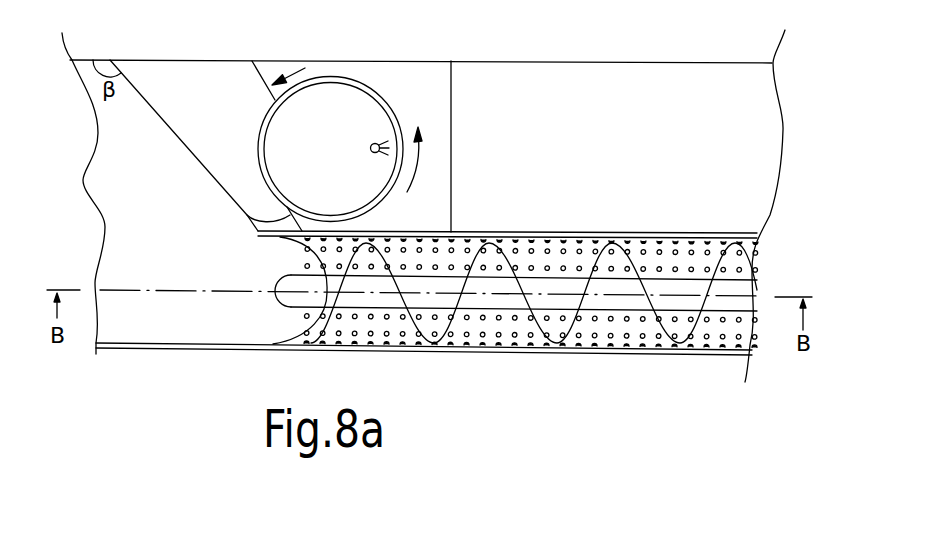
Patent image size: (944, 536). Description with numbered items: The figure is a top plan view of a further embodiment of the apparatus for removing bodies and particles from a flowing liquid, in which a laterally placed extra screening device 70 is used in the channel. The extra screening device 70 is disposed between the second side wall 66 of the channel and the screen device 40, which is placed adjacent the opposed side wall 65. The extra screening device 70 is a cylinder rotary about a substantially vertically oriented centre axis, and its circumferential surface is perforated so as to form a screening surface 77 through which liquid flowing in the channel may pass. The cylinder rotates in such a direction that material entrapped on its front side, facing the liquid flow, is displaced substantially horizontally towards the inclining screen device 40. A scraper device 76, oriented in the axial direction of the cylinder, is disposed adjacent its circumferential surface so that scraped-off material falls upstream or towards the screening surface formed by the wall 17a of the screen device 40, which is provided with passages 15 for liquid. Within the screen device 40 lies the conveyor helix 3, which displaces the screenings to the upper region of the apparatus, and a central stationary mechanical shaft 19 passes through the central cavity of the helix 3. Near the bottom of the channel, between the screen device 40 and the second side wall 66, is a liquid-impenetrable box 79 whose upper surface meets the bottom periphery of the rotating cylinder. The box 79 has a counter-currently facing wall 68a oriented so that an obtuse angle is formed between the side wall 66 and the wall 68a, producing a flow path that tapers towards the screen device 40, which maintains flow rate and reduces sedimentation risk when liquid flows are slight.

The second side wall of the channel 66 is at (128, 60).
The wall of the box 68a is at (165, 123).
The extra screening device 70 is at (365, 84).
The screening surface 77 is at (259, 160).
The box 79 is at (248, 182).
The scraper device 76 is at (247, 215).
The wall of the screen device 17a is at (683, 250).
The side wall of the channel 65 is at (200, 350).
The screen device 40 is at (332, 334).
The passages 15 is at (379, 334).
The conveyor helix 3 is at (425, 326).
The central stationary mechanical shaft 19 is at (497, 334).